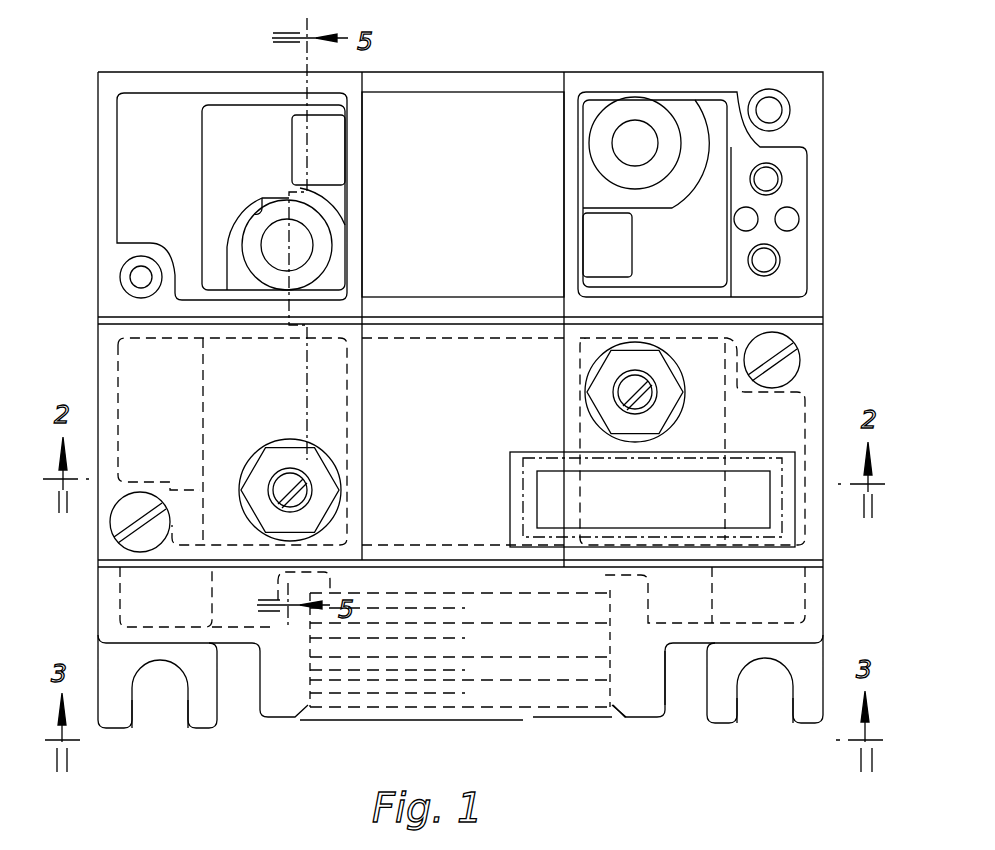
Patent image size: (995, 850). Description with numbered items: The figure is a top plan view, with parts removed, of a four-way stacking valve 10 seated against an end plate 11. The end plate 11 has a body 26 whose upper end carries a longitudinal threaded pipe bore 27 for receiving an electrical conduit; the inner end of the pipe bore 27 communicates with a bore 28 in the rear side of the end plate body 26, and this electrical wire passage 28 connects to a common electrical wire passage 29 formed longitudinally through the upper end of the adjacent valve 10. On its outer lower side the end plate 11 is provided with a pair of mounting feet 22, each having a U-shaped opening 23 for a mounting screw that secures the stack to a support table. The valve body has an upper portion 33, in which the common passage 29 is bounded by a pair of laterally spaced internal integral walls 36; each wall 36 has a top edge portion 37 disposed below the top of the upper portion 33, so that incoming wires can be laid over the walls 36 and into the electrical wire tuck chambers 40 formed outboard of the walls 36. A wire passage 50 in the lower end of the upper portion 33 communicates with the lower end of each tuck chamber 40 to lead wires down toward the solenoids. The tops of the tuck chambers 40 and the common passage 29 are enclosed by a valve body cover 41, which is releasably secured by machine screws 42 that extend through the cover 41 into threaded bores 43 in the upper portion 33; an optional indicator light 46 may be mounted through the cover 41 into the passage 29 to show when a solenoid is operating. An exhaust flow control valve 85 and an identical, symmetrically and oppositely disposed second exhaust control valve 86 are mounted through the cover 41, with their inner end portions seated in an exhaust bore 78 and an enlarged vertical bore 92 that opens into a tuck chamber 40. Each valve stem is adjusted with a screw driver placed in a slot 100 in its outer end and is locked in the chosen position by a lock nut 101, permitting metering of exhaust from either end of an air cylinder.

The four-way valve 10 is at (824, 242).
The end plate 11 is at (824, 591).
The mounting feet 22 is at (203, 710).
The U-shaped opening 23 is at (132, 707).
The end plate body 26 is at (643, 695).
The threaded pipe bore 27 is at (612, 668).
The electrical wire passage 28 is at (566, 580).
The common electrical wire passage 29 is at (490, 209).
The valve body upper portion 33 is at (812, 131).
The internal integral walls 36 is at (364, 260).
The top edge portion 37 is at (350, 192).
The electrical wire tuck chamber 40 is at (258, 161).
The valve body cover 41 is at (812, 405).
The machine screws 42 is at (130, 517).
The threaded bores 43 is at (135, 282).
The indicator light 46 is at (740, 468).
The wire passage 50 is at (325, 159).
The exhaust bore 78 is at (312, 240).
The exhaust flow control valve 85 is at (272, 458).
The second exhaust control valve 86 is at (660, 383).
The vertical bore 92 is at (257, 214).
The slot 100 is at (300, 490).
The lock nut 101 is at (313, 505).